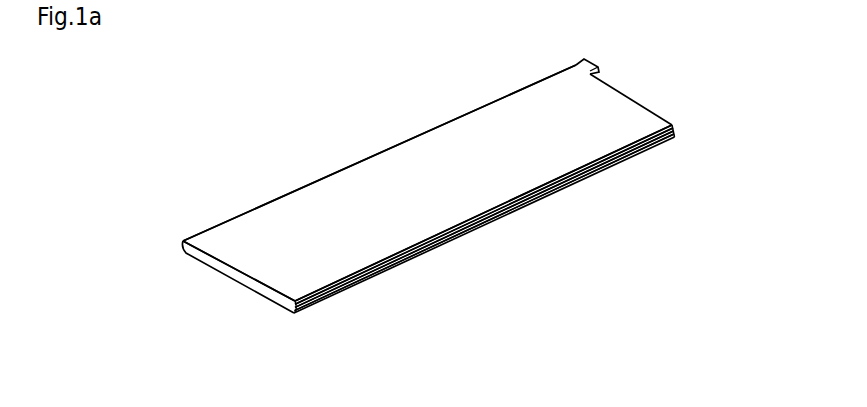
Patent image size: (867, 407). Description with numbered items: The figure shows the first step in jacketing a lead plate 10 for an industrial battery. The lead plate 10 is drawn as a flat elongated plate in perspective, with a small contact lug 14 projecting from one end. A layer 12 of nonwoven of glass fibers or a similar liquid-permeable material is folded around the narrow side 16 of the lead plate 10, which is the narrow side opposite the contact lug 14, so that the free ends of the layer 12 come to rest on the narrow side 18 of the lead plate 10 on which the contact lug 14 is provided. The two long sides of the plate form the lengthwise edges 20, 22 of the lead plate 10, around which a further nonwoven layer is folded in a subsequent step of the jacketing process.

The lead plate 10 is at (548, 188).
The layer of nonwoven 12 is at (550, 120).
The contact lug 14 is at (598, 67).
The narrow side 16 is at (292, 312).
The narrow side 18 is at (673, 125).
The lengthwise edge 20 is at (437, 247).
The lengthwise edge 22 is at (285, 194).